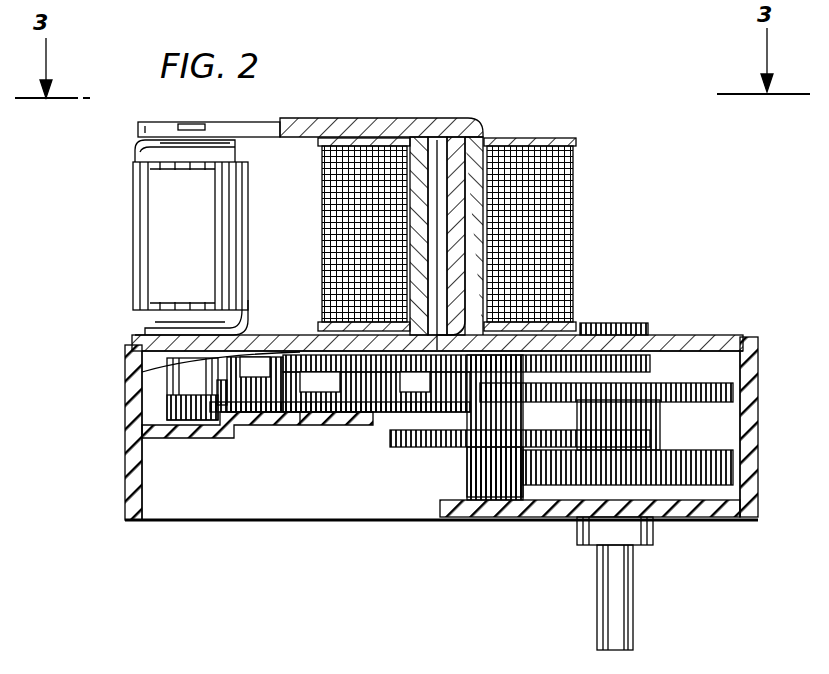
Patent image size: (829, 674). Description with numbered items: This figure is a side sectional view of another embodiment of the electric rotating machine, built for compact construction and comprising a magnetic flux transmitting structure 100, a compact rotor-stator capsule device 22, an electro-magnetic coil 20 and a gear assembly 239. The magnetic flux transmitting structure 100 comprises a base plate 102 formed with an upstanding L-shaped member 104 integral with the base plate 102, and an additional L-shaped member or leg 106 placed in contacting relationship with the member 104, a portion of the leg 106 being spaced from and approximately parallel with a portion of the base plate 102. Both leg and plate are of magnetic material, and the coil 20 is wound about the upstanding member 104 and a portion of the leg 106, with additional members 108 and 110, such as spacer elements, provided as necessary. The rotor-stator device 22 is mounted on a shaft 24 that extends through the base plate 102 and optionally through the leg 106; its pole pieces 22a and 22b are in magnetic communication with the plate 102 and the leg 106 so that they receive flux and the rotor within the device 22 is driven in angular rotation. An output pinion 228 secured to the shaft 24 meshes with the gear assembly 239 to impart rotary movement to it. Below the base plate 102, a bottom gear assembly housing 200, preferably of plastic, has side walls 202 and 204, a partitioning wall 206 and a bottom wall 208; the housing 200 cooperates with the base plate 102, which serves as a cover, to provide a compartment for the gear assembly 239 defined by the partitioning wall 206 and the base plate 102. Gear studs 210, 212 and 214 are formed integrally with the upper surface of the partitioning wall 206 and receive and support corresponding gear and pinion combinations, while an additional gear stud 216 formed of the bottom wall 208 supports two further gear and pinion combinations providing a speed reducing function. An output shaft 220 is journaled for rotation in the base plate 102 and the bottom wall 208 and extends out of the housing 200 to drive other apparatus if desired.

The magnetic flux transmitting structure 100 is at (270, 116).
The electro-magnetic coil 20 is at (566, 222).
The rotor-stator capsule device 22 is at (195, 232).
The pole piece 22a is at (250, 323).
The pole piece 22b is at (235, 145).
The shaft 24 is at (175, 360).
The base plate 102 is at (304, 335).
The upstanding L-shaped member 104 is at (478, 125).
The L-shaped leg 106 is at (332, 130).
The spacer element 108 is at (435, 140).
The spacer element 110 is at (418, 140).
The bottom gear assembly housing 200 is at (376, 509).
The side wall 202 is at (132, 498).
The side wall 204 is at (760, 419).
The partitioning wall 206 is at (250, 435).
The bottom wall 208 is at (511, 518).
The gear stud 210 is at (300, 430).
The gear stud 212 is at (340, 425).
The gear stud 214 is at (365, 360).
The gear stud 216 is at (470, 496).
The output shaft 220 is at (626, 583).
The output pinion 228 is at (170, 408).
The gear assembly 239 is at (291, 458).